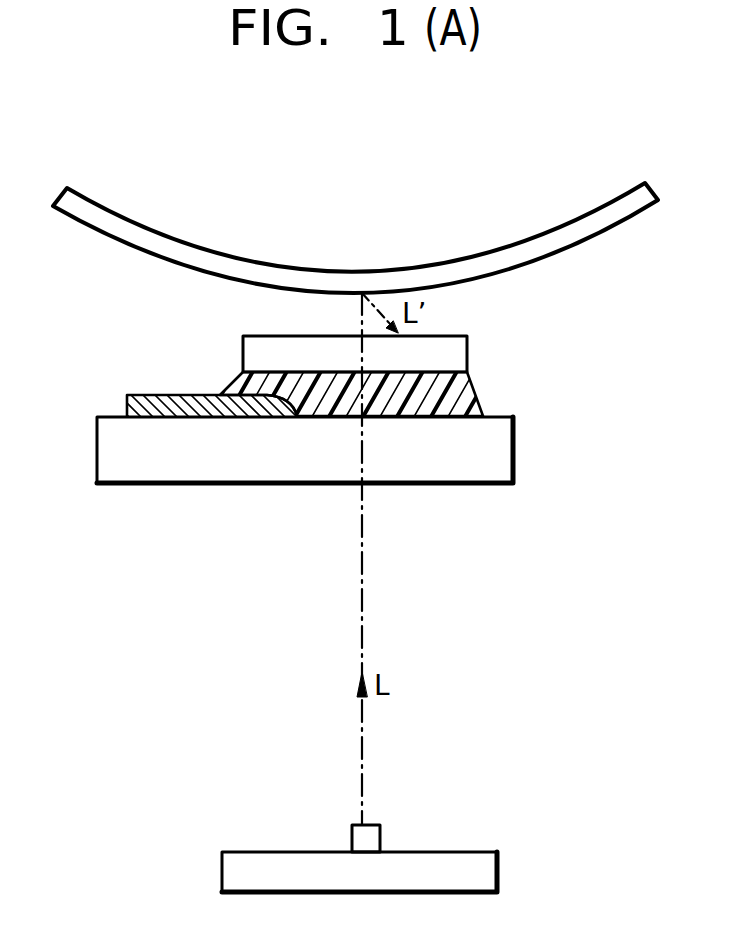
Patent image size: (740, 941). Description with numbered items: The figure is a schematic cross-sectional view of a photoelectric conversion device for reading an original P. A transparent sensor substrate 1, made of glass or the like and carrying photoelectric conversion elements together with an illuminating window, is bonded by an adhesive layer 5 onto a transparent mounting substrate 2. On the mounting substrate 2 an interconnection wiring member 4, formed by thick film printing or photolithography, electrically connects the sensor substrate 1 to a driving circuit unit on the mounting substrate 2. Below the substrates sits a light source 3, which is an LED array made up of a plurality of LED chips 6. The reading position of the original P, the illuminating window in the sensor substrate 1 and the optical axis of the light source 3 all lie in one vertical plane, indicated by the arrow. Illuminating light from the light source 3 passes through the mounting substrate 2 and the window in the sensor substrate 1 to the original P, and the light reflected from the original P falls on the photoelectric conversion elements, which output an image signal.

The original P is at (534, 237).
The transparent sensor substrate 1 is at (455, 355).
The transparent mounting substrate 2 is at (490, 450).
The light source 3 is at (453, 857).
The interconnection wiring member 4 is at (170, 400).
The adhesive layer 5 is at (465, 398).
The LED chip 6 is at (350, 840).